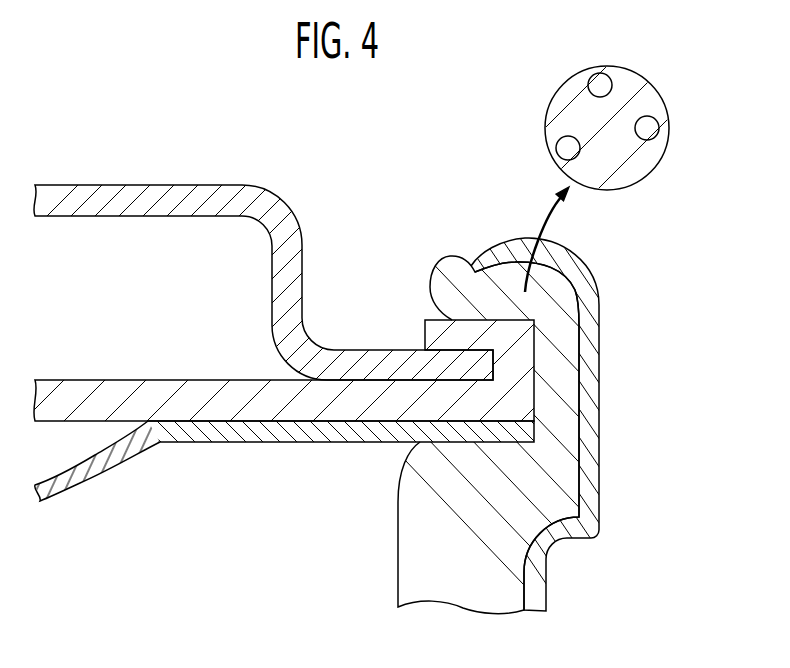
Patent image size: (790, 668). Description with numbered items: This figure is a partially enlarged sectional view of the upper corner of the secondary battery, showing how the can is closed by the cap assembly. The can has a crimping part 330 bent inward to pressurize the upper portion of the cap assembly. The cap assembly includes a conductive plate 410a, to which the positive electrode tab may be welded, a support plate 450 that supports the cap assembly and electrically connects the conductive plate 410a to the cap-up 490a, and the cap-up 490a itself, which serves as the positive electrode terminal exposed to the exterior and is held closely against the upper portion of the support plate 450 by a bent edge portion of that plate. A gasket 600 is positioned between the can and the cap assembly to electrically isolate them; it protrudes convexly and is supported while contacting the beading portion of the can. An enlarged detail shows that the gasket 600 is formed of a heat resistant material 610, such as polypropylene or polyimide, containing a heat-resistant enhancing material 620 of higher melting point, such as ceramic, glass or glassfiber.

The cap-up 490a is at (162, 185).
The support plate 450 is at (520, 397).
The gasket 600 is at (568, 343).
The conductive plate 410a is at (527, 433).
The crimping part 330 is at (598, 287).
The heat resistant material 610 is at (650, 103).
The heat-resistant enhancing material 620 is at (648, 127).